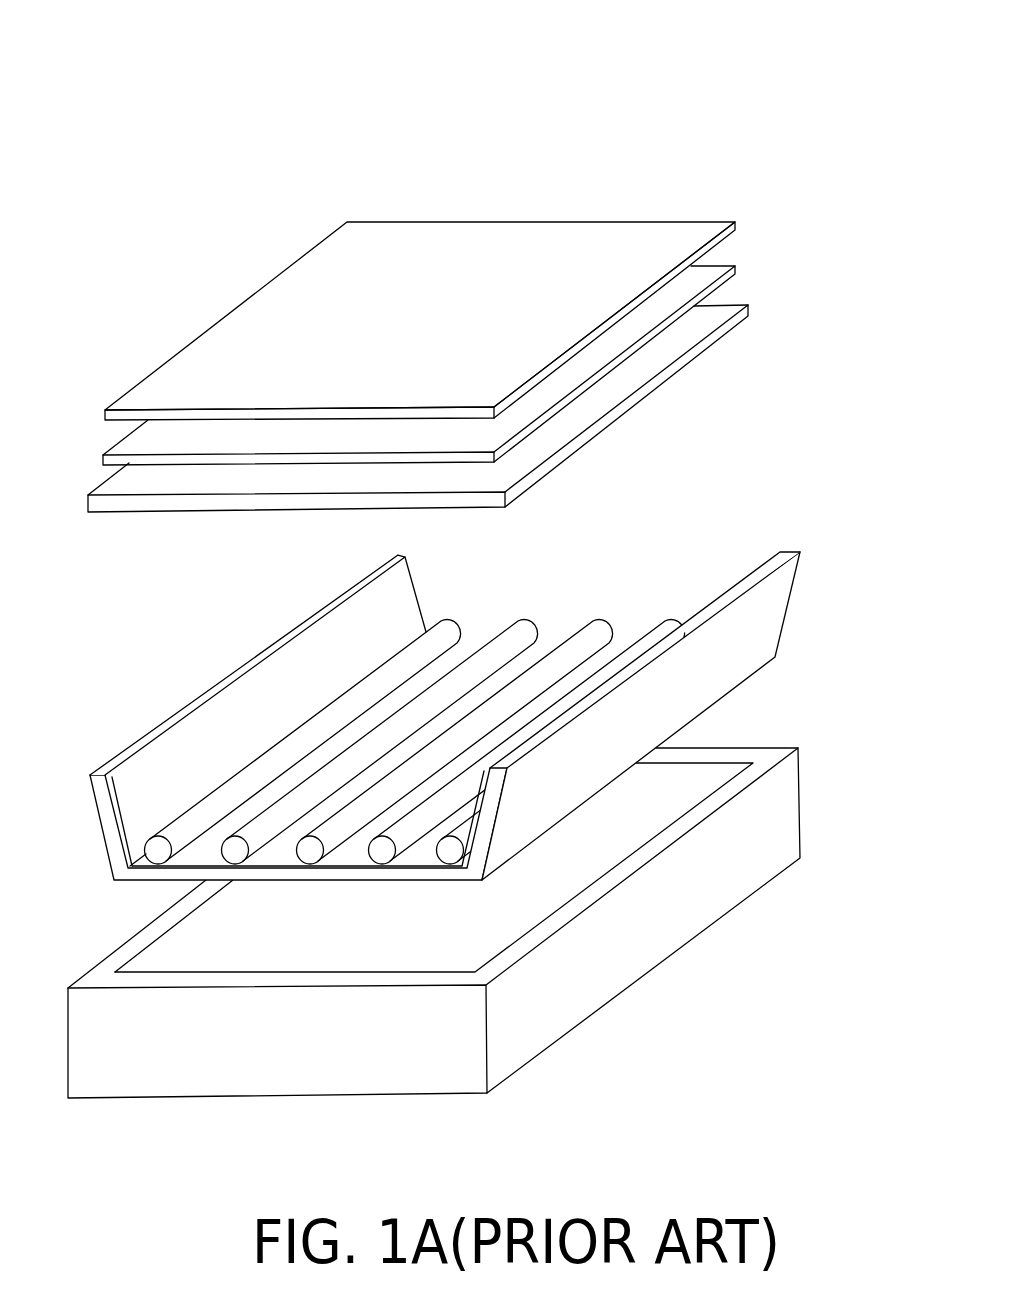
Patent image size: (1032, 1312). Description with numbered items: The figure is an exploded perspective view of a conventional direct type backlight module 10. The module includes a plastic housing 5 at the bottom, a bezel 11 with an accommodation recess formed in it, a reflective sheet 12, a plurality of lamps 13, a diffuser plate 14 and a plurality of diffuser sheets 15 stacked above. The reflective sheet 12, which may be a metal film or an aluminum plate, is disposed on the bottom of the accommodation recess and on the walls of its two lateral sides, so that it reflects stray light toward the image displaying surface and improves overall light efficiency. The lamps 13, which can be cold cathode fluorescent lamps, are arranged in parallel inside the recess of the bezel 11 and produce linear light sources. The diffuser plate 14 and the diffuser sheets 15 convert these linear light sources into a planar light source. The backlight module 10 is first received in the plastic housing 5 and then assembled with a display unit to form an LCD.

The direct type backlight module 10 is at (858, 42).
The plastic housing 5 is at (780, 838).
The bezel 11 is at (763, 635).
The reflective sheet 12 is at (482, 716).
The lamps 13 is at (450, 624).
The diffuser plate 14 is at (747, 308).
The diffuser sheets 15 is at (738, 222).